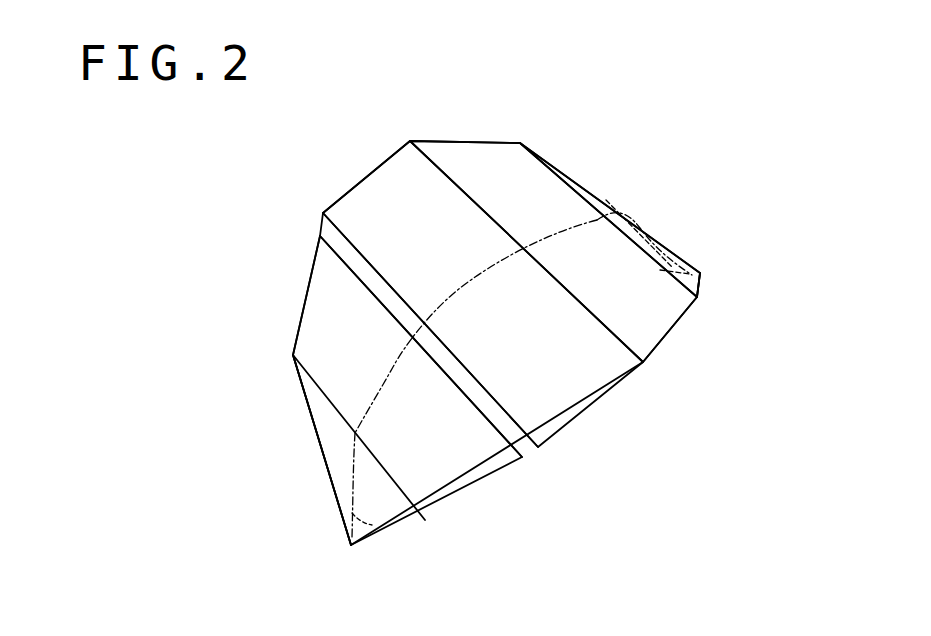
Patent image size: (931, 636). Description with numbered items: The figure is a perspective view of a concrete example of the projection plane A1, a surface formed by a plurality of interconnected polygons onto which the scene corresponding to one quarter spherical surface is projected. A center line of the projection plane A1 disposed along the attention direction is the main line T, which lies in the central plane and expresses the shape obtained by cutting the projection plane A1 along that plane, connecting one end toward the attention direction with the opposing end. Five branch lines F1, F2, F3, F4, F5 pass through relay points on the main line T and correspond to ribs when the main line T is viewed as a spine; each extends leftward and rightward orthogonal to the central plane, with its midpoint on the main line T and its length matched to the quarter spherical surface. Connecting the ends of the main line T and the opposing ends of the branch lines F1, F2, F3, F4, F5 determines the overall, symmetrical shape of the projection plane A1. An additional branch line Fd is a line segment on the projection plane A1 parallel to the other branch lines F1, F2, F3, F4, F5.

The projection plane A1 is at (603, 433).
The branch line F1 is at (675, 247).
The branch line F2 is at (570, 187).
The branch line F3 is at (423, 152).
The branch line F4 is at (340, 223).
The branch line F5 is at (413, 500).
The branch line Fd is at (335, 257).
The main line T is at (365, 520).